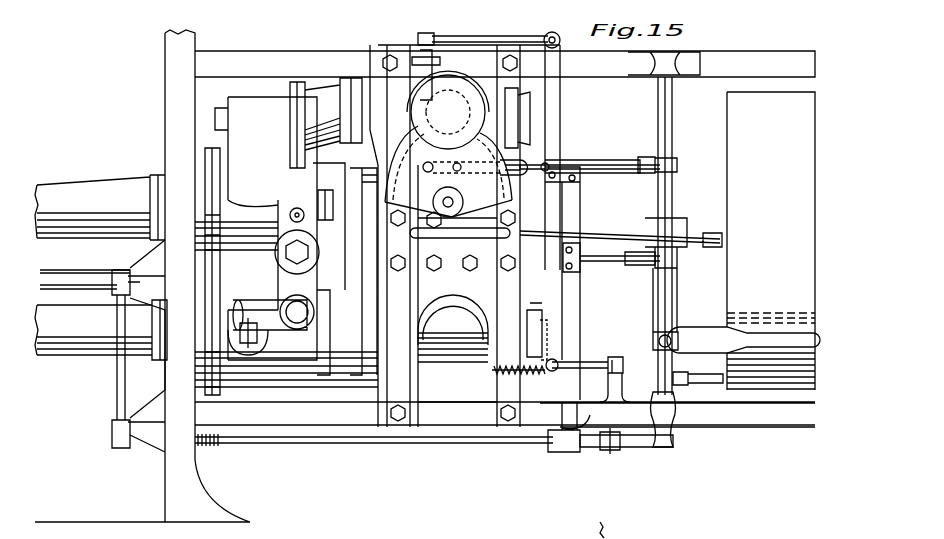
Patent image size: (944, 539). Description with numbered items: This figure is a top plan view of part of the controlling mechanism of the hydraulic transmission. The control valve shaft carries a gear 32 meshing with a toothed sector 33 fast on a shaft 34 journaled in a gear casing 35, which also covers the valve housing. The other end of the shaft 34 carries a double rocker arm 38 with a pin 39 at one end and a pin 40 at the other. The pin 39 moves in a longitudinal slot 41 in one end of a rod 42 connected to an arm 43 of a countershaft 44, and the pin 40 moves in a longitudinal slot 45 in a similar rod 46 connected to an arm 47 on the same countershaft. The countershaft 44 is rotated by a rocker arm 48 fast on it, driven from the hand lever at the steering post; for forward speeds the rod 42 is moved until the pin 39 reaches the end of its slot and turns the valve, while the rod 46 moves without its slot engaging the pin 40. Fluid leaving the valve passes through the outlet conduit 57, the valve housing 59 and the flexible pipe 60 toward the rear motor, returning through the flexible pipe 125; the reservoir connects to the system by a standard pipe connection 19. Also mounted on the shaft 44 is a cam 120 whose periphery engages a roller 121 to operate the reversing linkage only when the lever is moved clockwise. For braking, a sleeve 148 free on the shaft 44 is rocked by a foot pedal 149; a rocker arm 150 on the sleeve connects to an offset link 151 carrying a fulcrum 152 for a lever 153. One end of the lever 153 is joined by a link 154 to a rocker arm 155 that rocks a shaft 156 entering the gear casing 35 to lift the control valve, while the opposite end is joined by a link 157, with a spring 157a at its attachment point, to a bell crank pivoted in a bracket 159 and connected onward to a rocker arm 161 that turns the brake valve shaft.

The standard pipe connection 19 is at (271, 325).
The gear 32 is at (448, 112).
The toothed sector 33 is at (448, 171).
The shaft 34 is at (460, 202).
The gear casing 35 is at (452, 76).
The double rocker arm 38 is at (443, 182).
The pin 39 is at (428, 163).
The pin 40 is at (453, 318).
The longitudinal slot 41 is at (455, 166).
The rod 42 is at (600, 162).
The arm 43 is at (678, 168).
The countershaft 44 is at (673, 143).
The longitudinal slot 45 is at (428, 238).
The rod 46 is at (598, 235).
The arm 47 is at (722, 258).
The rocker arm 48 is at (678, 388).
The outlet conduit 57 is at (347, 105).
The valve housing 59 is at (293, 387).
The flexible pipe 60 is at (100, 207).
The cam 120 is at (650, 448).
The roller 121 is at (620, 452).
The flexible pipe 125 is at (101, 315).
The sleeve 148 is at (676, 304).
The foot pedal 149 is at (723, 538).
The rocker arm 150 is at (674, 265).
The offset link 151 is at (572, 195).
The fulcrum 152 is at (553, 172).
The lever 153 is at (555, 98).
The link 154 is at (500, 36).
The rocker arm 155 is at (428, 36).
The shaft 156 is at (420, 37).
The link 157 is at (572, 363).
The spring 157a is at (507, 373).
The bracket 159 is at (612, 410).
The rocker arm 161 is at (546, 334).